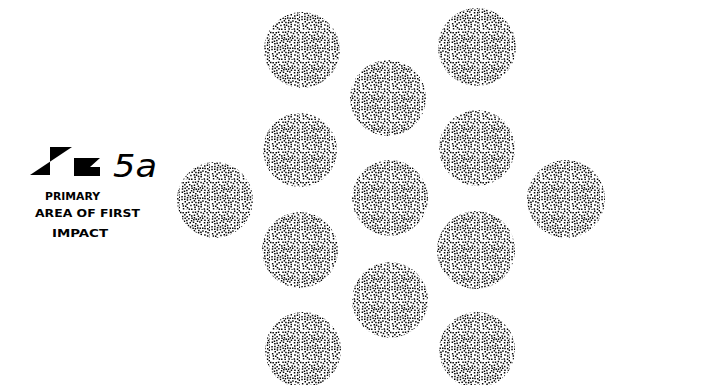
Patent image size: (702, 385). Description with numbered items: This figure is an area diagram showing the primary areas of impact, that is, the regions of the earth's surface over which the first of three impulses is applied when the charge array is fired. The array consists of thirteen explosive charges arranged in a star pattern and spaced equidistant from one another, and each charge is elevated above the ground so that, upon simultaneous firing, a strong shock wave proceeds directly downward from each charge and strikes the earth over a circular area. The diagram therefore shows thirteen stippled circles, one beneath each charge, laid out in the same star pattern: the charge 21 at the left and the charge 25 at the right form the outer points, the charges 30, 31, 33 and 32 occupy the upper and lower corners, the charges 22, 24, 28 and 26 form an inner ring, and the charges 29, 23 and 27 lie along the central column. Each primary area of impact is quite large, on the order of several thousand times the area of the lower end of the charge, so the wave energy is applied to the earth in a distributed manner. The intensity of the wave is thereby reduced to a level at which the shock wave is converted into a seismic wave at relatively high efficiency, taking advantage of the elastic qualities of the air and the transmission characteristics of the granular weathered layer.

The charge 21 is at (215, 200).
The charge 22 is at (300, 150).
The charge 23 is at (390, 198).
The charge 24 is at (477, 148).
The charge 25 is at (566, 199).
The charge 26 is at (476, 250).
The charge 27 is at (390, 300).
The charge 28 is at (300, 250).
The charge 29 is at (388, 98).
The charge 30 is at (302, 50).
The charge 31 is at (477, 47).
The charge 32 is at (477, 348).
The charge 33 is at (303, 348).